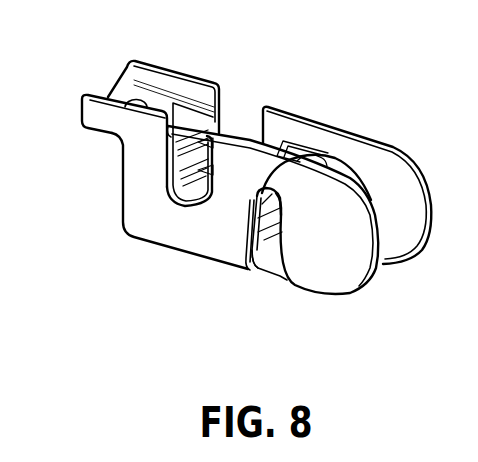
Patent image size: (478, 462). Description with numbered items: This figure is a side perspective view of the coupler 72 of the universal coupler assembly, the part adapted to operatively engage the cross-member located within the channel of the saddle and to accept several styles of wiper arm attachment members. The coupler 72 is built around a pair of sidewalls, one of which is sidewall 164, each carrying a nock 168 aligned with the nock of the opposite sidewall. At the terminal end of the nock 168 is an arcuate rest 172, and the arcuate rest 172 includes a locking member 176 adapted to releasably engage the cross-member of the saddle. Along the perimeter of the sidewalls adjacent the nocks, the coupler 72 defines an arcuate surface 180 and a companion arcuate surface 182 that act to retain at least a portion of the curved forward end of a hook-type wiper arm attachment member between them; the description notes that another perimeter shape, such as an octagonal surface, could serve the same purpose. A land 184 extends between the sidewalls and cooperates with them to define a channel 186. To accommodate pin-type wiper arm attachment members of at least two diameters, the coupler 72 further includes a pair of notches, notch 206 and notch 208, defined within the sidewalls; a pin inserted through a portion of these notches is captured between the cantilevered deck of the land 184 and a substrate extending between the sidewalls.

The coupler 72 is at (147, 303).
The sidewall 164 is at (173, 237).
The nock 168 is at (267, 263).
The arcuate rest 172 is at (266, 192).
The locking member 176 is at (248, 267).
The arcuate surface 180 is at (347, 285).
The arcuate surface 182 is at (400, 178).
The land 184 is at (137, 93).
The channel 186 is at (104, 79).
The notch 206 is at (163, 192).
The notch 208 is at (238, 108).